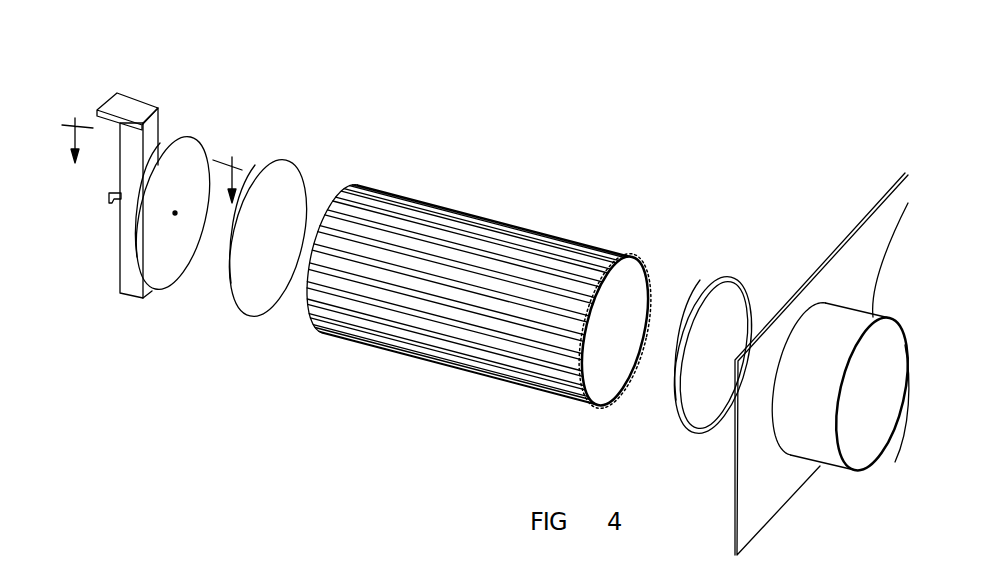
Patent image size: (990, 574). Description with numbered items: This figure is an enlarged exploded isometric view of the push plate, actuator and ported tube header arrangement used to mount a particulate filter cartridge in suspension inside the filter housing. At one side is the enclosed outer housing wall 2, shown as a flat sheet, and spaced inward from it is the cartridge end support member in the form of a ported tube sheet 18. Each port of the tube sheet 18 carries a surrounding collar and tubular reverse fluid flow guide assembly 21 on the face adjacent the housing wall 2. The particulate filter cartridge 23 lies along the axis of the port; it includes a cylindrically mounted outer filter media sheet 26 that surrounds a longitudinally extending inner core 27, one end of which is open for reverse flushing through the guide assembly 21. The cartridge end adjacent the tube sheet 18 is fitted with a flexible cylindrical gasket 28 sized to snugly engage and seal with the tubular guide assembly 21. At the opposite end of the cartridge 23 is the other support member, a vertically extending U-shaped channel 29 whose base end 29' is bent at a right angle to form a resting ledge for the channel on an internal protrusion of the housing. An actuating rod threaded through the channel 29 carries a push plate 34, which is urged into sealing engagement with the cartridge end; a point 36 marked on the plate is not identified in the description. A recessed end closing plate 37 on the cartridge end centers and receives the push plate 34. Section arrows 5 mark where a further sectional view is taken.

The outer housing wall 2 is at (905, 407).
The section line 5 is at (152, 143).
The ported tube sheet 18 is at (867, 270).
The tubular reverse fluid flow guide assembly 21 is at (820, 453).
The filter cartridge 23 is at (457, 210).
The outer filter media sheet 26 is at (588, 233).
The inner core 27 is at (625, 358).
The flexible cylindrical gasket 28 is at (735, 277).
The U-shaped channel 29 is at (104, 203).
The end of base portion 29' is at (155, 82).
The push plate 34 is at (157, 263).
The disk center 36 is at (175, 214).
The recessed end closing plate 37 is at (285, 195).